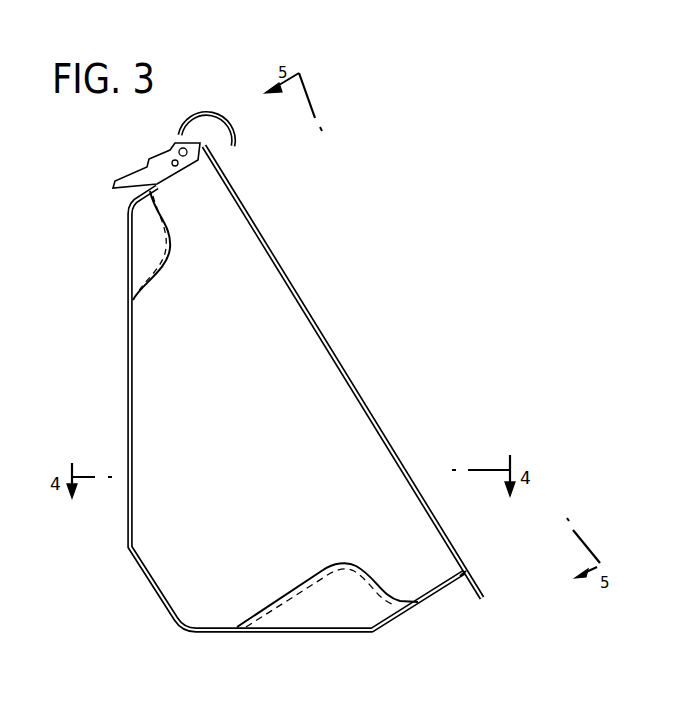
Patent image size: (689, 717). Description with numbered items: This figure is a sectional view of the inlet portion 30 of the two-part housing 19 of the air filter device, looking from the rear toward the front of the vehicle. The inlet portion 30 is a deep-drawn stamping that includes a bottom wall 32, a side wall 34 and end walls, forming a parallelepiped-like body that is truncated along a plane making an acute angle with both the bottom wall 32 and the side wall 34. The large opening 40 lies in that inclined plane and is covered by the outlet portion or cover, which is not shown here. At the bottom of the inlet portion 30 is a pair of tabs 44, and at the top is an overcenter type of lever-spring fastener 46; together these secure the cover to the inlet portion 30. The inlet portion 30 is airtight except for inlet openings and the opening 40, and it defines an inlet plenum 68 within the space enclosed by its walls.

The two-part housing 19 is at (244, 441).
The inlet portion 30 is at (296, 347).
The bottom wall 32 is at (212, 632).
The side wall 34 is at (128, 375).
The large opening 40 is at (366, 372).
The tabs 44 is at (478, 585).
The lever-spring fastener 46 is at (157, 170).
The inlet plenum 68 is at (249, 453).